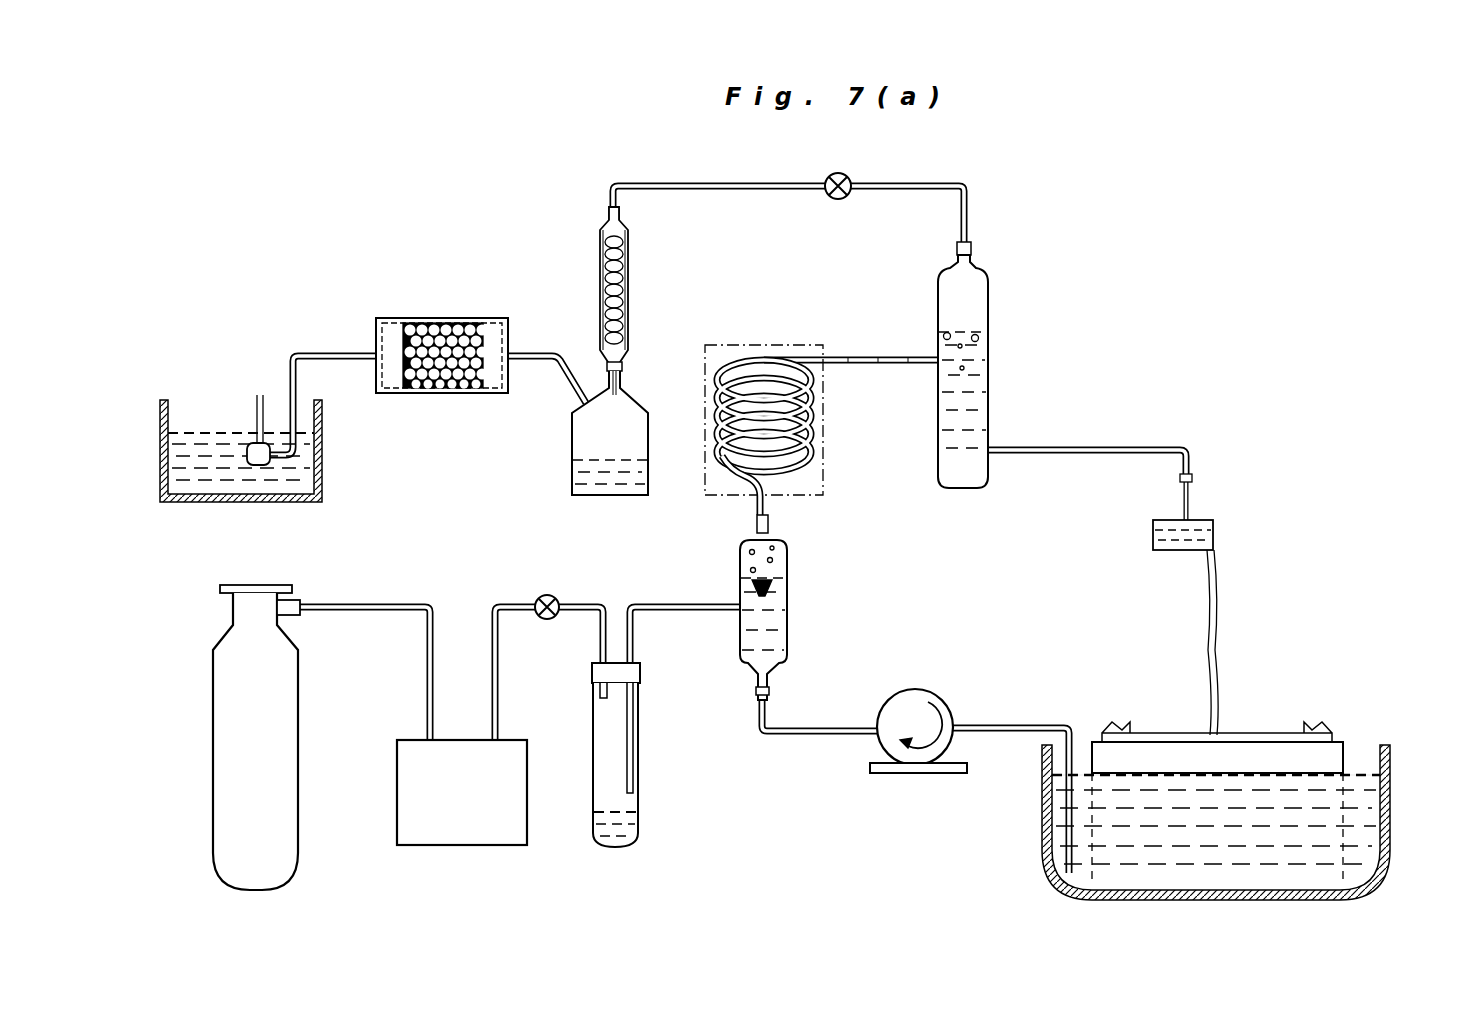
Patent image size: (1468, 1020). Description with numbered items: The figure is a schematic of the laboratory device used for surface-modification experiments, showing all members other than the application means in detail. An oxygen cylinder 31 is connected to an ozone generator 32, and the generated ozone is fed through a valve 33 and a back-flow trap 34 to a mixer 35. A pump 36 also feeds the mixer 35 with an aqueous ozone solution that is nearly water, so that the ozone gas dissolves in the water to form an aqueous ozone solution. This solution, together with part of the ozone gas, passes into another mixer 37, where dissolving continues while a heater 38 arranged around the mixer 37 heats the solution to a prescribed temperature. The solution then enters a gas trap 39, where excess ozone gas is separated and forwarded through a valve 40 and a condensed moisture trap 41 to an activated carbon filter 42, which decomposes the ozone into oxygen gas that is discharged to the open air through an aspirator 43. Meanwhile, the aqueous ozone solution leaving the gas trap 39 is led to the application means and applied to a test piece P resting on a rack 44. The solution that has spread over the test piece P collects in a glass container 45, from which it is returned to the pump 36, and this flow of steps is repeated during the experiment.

The oxygen cylinder 31 is at (213, 770).
The ozone generator 32 is at (458, 845).
The valve 33 is at (547, 595).
The back-flow trap 34 is at (640, 797).
The mixer 35 is at (787, 580).
The pump 36 is at (915, 690).
The mixer 37 is at (776, 358).
The heater 38 is at (823, 467).
The gas trap 39 is at (988, 305).
The valve 40 is at (838, 199).
The condensed moisture trap 41 is at (572, 435).
The activated carbon filter 42 is at (453, 318).
The aspirator 43 is at (322, 463).
The rack 44 is at (1352, 850).
The glass container 45 is at (1390, 802).
The test piece P is at (1340, 742).